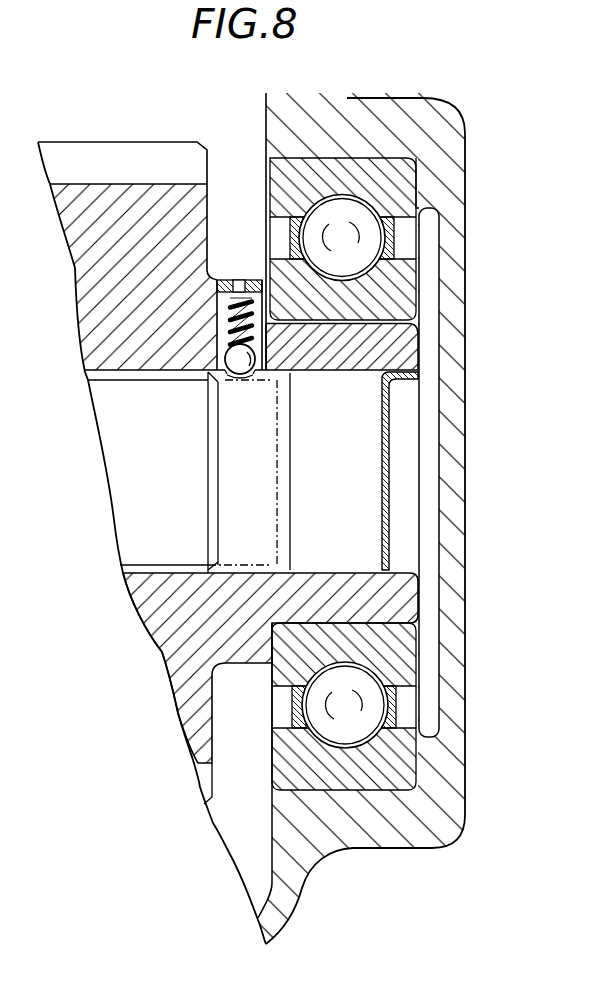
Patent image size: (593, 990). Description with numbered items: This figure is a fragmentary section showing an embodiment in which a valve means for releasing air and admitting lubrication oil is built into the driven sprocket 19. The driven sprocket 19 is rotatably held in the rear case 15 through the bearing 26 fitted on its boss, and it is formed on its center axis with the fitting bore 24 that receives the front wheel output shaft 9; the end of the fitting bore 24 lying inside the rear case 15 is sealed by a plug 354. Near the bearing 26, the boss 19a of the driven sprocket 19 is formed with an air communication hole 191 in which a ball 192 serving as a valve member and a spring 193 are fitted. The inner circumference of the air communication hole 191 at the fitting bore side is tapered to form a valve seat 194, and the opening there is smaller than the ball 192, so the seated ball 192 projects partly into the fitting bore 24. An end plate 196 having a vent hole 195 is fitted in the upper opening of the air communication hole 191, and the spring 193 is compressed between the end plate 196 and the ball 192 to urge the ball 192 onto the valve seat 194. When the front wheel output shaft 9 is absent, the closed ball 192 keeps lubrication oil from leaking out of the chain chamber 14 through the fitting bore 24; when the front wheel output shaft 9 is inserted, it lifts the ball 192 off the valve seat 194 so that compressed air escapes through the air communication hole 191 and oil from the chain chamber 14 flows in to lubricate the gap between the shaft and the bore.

The front wheel output shaft 9 is at (128, 524).
The chain chamber 14 is at (231, 143).
The rear case 15 is at (457, 181).
The driven sprocket 19 is at (85, 282).
The boss 19a is at (406, 347).
The fitting bore 24 is at (360, 540).
The bearing 26 is at (405, 296).
The air communication hole 191 is at (258, 328).
The ball 192 is at (233, 374).
The spring 193 is at (252, 343).
The valve seat 194 is at (250, 372).
The vent hole 195 is at (236, 296).
The end plate 196 is at (223, 278).
The plug 354 is at (390, 458).